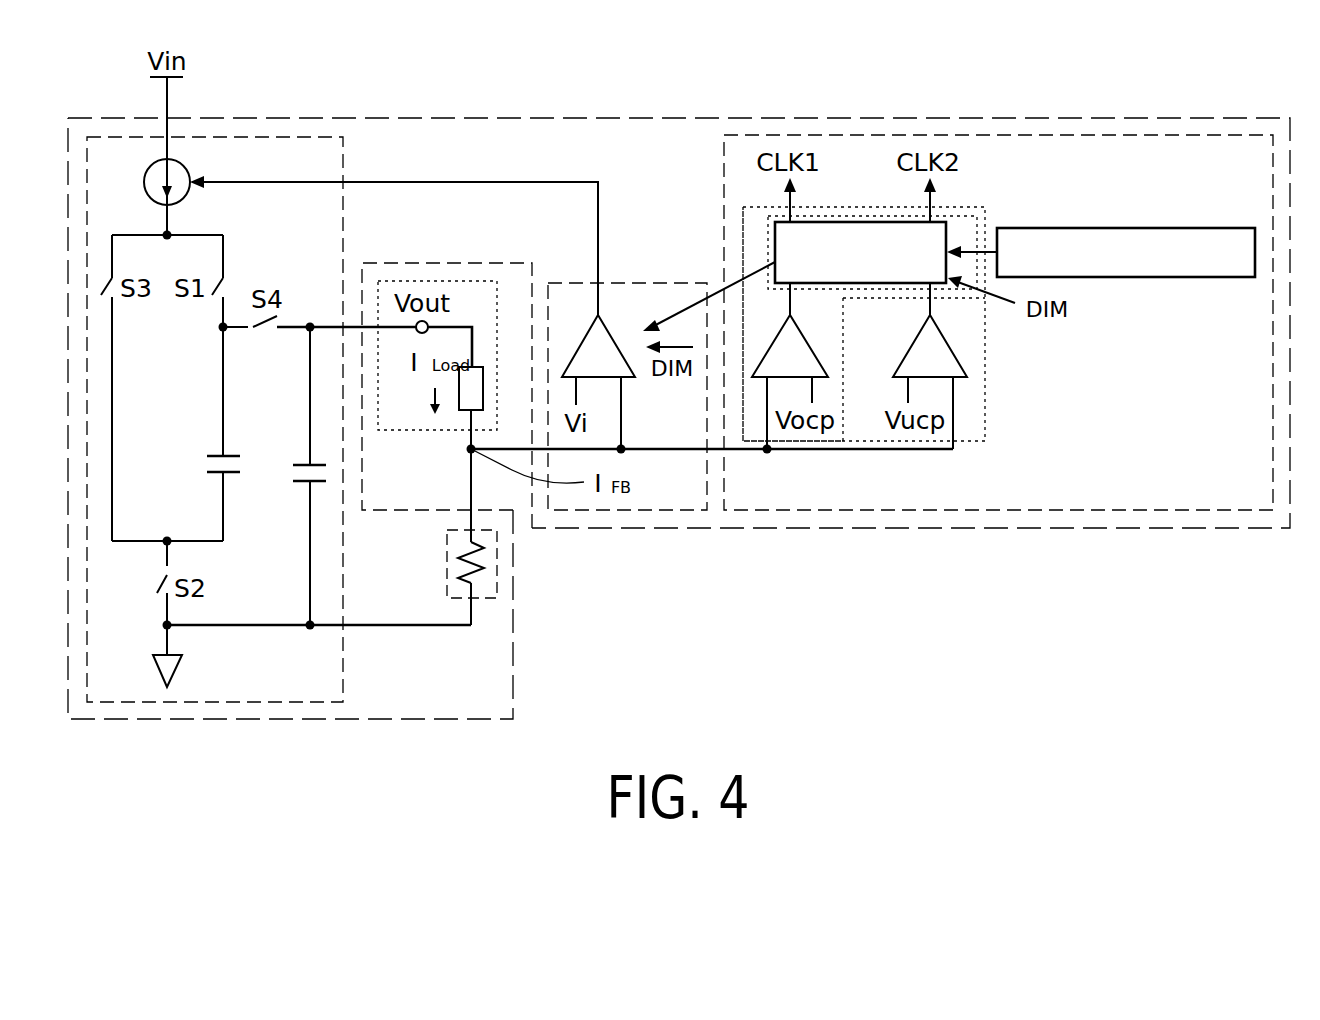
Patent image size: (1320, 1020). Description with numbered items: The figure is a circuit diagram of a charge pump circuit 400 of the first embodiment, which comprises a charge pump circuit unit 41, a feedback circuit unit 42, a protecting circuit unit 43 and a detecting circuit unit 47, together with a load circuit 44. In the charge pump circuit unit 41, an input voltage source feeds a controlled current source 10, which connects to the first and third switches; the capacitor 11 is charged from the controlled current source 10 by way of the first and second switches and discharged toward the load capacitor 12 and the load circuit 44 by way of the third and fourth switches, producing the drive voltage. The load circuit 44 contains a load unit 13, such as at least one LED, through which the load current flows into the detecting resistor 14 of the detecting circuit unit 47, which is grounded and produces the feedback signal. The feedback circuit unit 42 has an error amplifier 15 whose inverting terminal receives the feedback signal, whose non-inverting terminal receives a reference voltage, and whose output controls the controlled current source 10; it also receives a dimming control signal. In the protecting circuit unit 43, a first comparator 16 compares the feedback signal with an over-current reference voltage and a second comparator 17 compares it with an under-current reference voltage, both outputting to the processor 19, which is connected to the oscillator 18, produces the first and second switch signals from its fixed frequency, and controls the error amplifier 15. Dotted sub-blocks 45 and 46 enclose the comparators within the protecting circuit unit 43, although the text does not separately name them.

The charge pump circuit 400 is at (428, 117).
The charge pump circuit unit 41 is at (252, 136).
The feedback circuit unit 42 is at (668, 283).
The protecting circuit unit 43 is at (1068, 135).
The load circuit 44 is at (432, 280).
The over-current comparator unit 45 is at (797, 452).
The comparator unit 46 is at (985, 420).
The detecting circuit unit 47 is at (497, 562).
The controlled current source 10 is at (185, 199).
The capacitor 11 is at (207, 464).
The load capacitor 12 is at (302, 483).
The load unit 13 is at (470, 392).
The detecting resistor 14 is at (447, 566).
The error amplifier 15 is at (608, 328).
The first comparator 16 is at (812, 347).
The second comparator 17 is at (967, 355).
The oscillator 18 is at (1160, 278).
The processor 19 is at (977, 215).